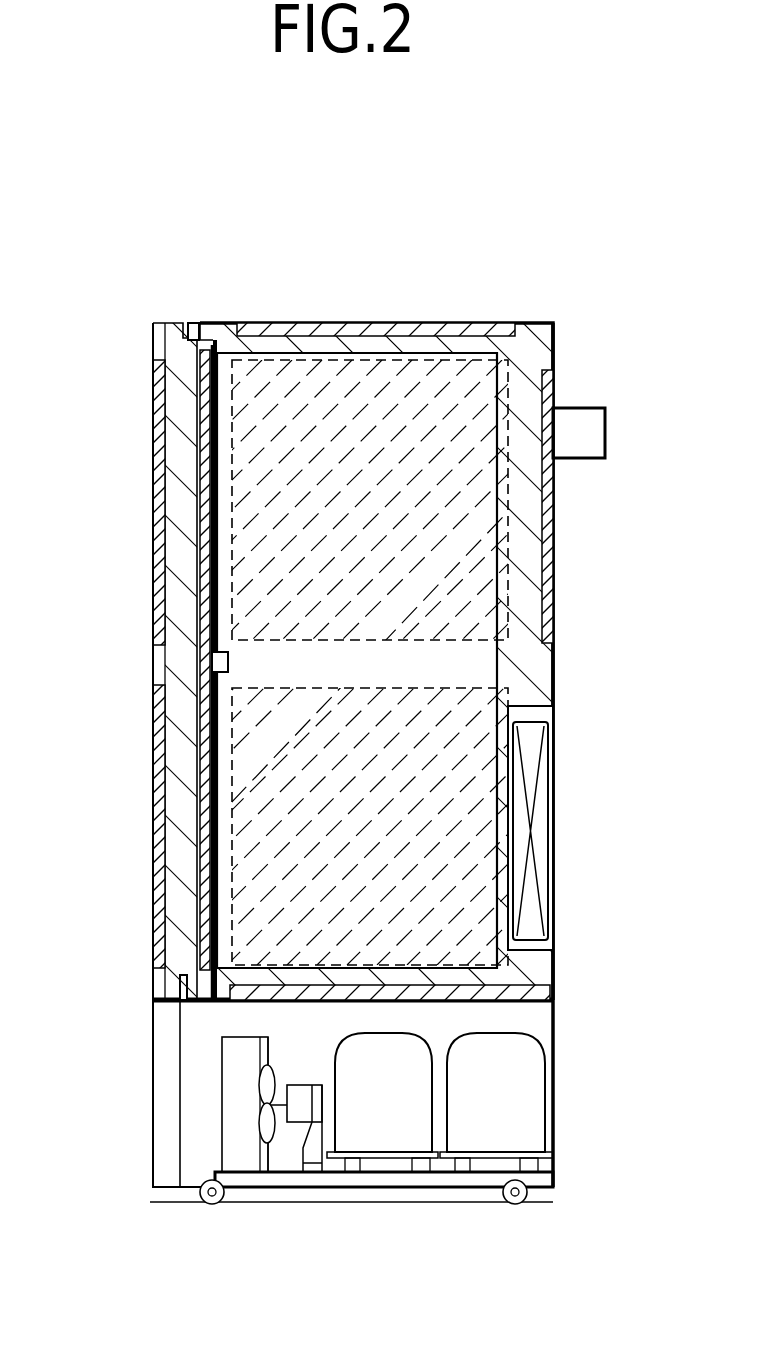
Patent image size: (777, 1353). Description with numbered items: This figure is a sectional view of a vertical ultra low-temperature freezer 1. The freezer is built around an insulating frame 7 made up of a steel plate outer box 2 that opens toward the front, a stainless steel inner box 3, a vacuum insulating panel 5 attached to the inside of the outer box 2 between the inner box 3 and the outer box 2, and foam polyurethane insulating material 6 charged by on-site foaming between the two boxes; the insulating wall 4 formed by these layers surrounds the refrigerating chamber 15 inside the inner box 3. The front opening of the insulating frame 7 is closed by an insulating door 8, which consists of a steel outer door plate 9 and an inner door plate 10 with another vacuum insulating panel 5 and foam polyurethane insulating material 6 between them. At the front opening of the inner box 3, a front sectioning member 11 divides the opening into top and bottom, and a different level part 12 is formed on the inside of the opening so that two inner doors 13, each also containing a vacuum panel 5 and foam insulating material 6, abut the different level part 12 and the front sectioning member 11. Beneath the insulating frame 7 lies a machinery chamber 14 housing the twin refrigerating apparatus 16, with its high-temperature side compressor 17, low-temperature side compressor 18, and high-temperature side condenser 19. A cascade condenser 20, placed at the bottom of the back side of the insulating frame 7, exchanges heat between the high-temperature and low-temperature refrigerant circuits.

The vertical ultra low-temperature freezer 1 is at (543, 290).
The outer box 2 is at (556, 697).
The inner box 3 is at (480, 497).
The heat insulating wall 4 is at (556, 560).
The vacuum insulating panel 5 is at (370, 326).
The foam polyurethane insulating material 6 is at (545, 335).
The insulating frame 7 is at (556, 672).
The insulating door 8 is at (150, 680).
The outer door plate 9 is at (152, 343).
The inner door plate 10 is at (200, 492).
The front sectioning member 11 is at (210, 662).
The different level part 12 is at (196, 322).
The inner door 13 is at (200, 405).
The machinery chamber 14 is at (540, 1018).
The refrigerating chamber 15 is at (480, 648).
The twin refrigerating apparatus 16 is at (530, 1110).
The high-temperature side compressor 17 is at (387, 1135).
The low-temperature side compressor 18 is at (500, 1135).
The condenser 19 is at (235, 1137).
The cascade condenser 20 is at (540, 810).